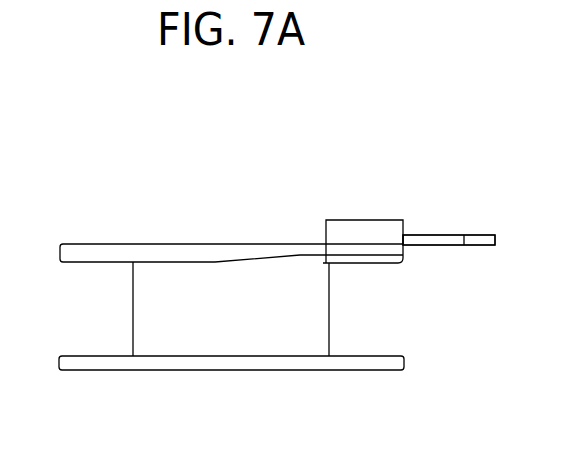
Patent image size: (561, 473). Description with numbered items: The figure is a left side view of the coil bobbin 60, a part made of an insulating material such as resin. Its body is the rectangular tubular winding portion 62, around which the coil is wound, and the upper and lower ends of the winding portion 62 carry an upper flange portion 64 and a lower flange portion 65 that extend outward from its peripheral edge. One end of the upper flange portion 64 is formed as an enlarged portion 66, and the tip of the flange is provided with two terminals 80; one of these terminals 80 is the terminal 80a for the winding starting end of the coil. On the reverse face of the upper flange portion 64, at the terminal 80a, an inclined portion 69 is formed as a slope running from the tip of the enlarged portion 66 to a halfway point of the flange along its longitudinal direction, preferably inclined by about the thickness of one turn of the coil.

The coil bobbin 60 is at (68, 220).
The upper flange portion 64 is at (124, 255).
The inclined portion 69 is at (283, 258).
The enlarged portion 66 is at (366, 232).
The terminal of winding starting end 80a is at (438, 240).
The terminals 80 is at (449, 240).
The winding portion 62 is at (329, 306).
The lower flange portion 65 is at (140, 363).